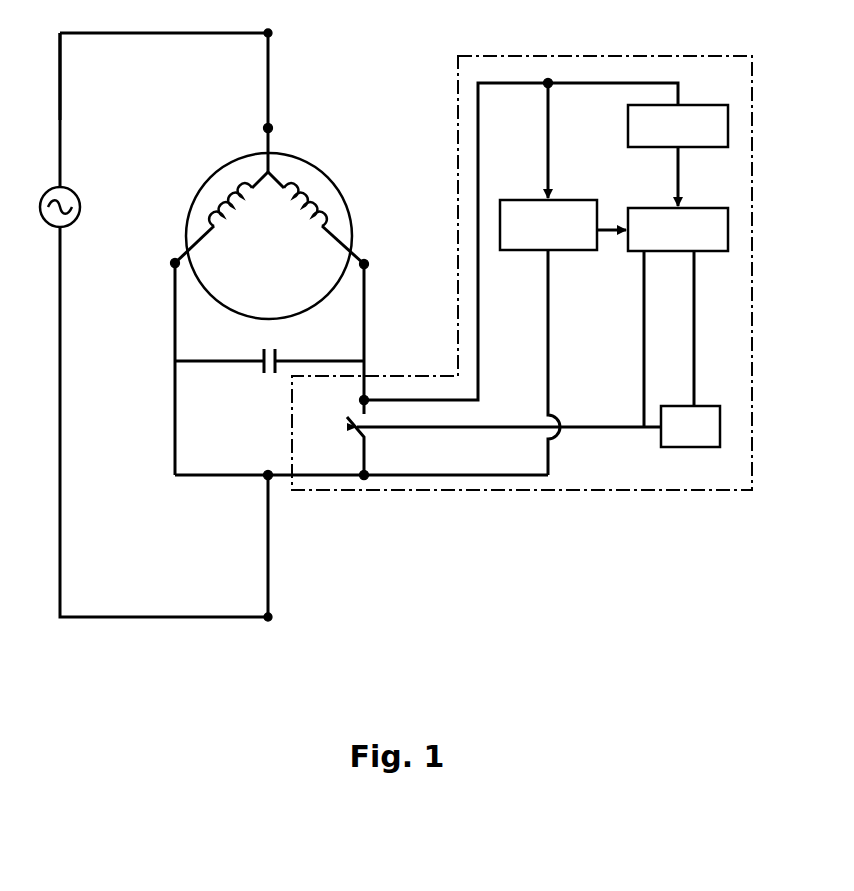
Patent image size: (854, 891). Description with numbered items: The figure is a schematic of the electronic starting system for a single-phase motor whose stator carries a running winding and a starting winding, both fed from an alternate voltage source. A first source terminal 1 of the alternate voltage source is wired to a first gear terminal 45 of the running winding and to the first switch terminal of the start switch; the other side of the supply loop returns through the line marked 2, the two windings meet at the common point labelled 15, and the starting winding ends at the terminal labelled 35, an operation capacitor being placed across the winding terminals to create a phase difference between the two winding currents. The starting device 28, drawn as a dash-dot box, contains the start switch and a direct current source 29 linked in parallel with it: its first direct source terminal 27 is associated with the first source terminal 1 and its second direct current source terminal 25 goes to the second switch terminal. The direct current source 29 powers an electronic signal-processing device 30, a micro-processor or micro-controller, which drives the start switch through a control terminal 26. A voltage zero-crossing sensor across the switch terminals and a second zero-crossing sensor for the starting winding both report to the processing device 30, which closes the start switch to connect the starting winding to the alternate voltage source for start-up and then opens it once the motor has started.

The first source terminal 1 is at (156, 325).
The power supply line 2 is at (60, 130).
The common connection node 15 is at (270, 127).
The second direct current source terminal 25 is at (548, 162).
The control terminal 26 is at (590, 428).
The first direct source terminal 27 is at (550, 320).
The starting device 28 is at (541, 56).
The direct current source 29 is at (505, 200).
The electronic signal-processing device 30 is at (690, 208).
The terminal of winding B2 35 is at (366, 264).
The first gear terminal 45 is at (174, 262).